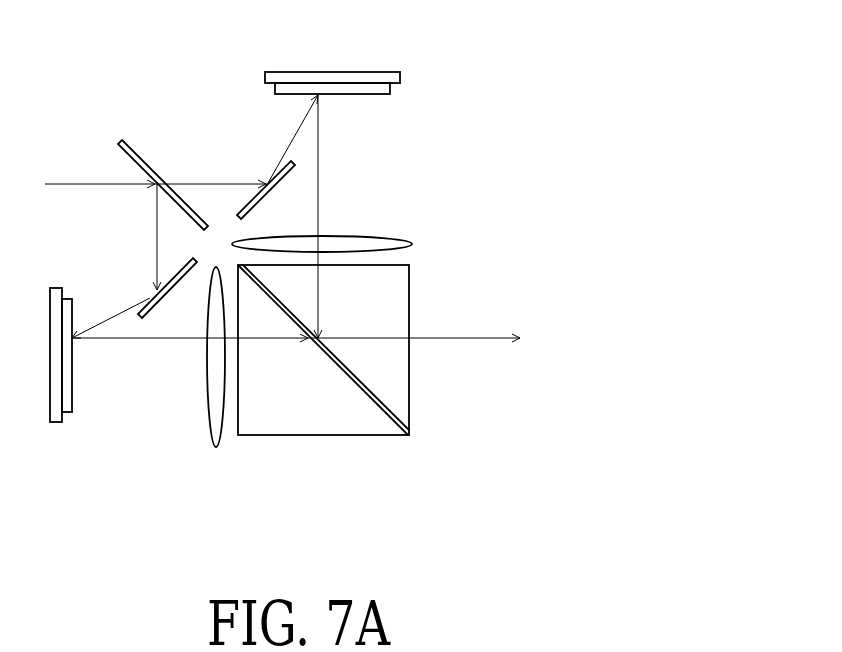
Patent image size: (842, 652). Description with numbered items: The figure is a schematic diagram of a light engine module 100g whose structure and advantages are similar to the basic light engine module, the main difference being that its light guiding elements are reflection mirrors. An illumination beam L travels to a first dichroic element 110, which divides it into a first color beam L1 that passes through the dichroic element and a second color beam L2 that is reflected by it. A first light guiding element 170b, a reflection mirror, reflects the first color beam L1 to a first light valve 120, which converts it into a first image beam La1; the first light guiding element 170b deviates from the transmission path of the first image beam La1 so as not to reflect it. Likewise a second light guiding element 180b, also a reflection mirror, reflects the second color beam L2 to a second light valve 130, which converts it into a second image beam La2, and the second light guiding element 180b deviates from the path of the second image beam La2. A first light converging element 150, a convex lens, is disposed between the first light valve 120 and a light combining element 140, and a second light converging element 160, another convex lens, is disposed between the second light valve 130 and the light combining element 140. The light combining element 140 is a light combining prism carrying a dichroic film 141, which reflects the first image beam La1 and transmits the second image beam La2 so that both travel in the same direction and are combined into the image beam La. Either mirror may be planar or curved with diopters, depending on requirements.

The light engine module 100g is at (515, 88).
The first dichroic element 110 is at (134, 150).
The first light valve 120 is at (358, 77).
The second light valve 130 is at (53, 392).
The light combining element 140 is at (347, 453).
The dichroic film 141 is at (392, 428).
The first light converging element 150 is at (415, 243).
The second light converging element 160 is at (220, 448).
The first light guiding element 170b is at (288, 175).
The second light guiding element 180b is at (178, 270).
The illumination beam L is at (77, 183).
The first color beam L1 is at (203, 183).
The second color beam L2 is at (157, 228).
The image beam La is at (450, 342).
The first image beam La1 is at (318, 283).
The second image beam La2 is at (300, 342).